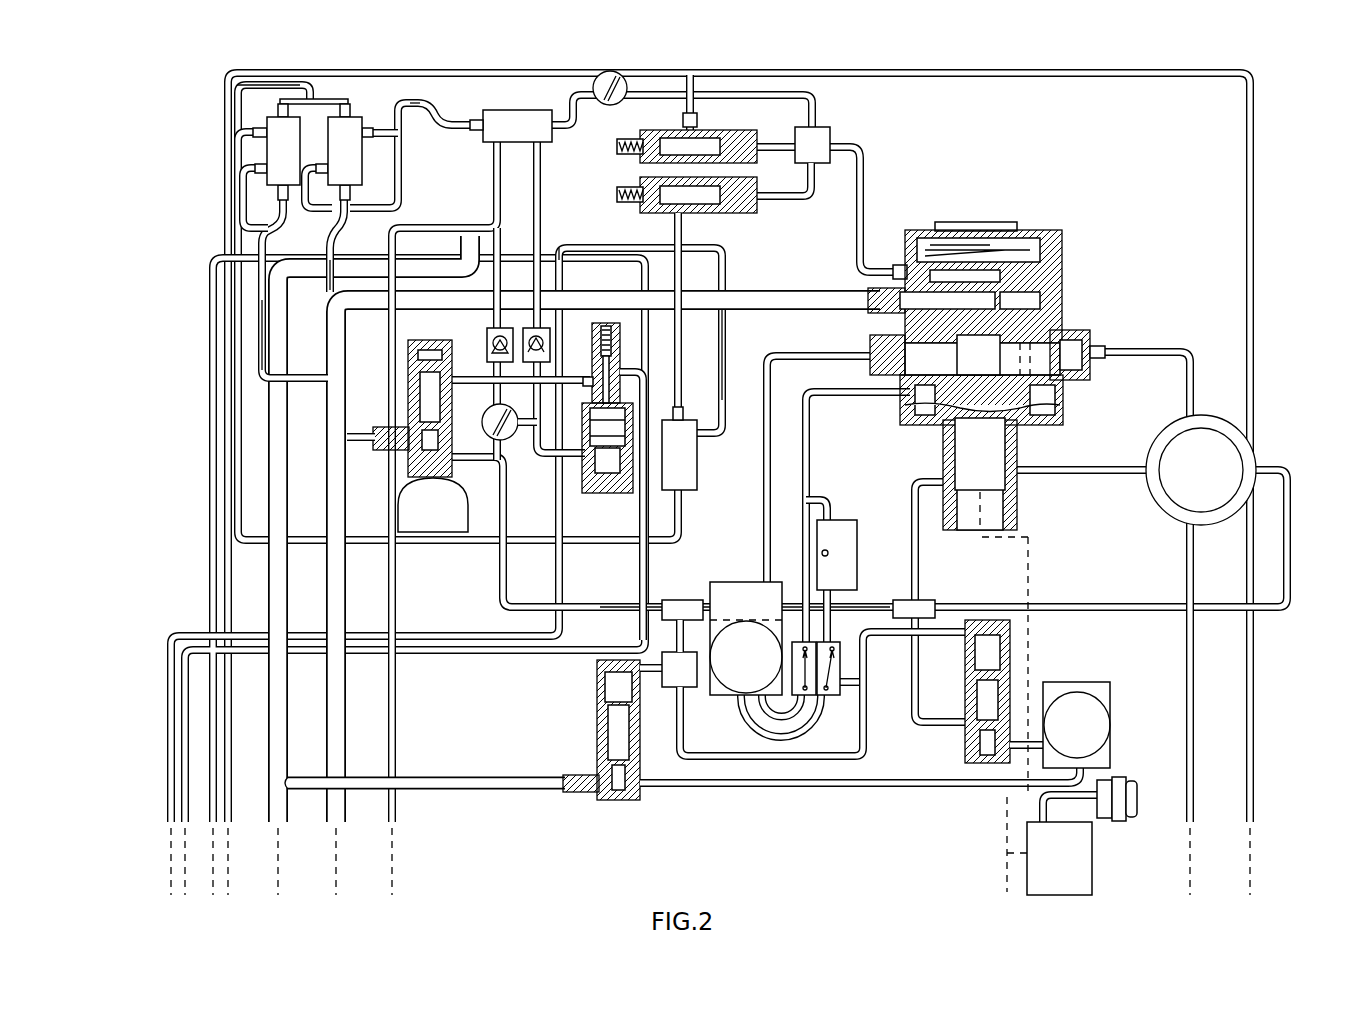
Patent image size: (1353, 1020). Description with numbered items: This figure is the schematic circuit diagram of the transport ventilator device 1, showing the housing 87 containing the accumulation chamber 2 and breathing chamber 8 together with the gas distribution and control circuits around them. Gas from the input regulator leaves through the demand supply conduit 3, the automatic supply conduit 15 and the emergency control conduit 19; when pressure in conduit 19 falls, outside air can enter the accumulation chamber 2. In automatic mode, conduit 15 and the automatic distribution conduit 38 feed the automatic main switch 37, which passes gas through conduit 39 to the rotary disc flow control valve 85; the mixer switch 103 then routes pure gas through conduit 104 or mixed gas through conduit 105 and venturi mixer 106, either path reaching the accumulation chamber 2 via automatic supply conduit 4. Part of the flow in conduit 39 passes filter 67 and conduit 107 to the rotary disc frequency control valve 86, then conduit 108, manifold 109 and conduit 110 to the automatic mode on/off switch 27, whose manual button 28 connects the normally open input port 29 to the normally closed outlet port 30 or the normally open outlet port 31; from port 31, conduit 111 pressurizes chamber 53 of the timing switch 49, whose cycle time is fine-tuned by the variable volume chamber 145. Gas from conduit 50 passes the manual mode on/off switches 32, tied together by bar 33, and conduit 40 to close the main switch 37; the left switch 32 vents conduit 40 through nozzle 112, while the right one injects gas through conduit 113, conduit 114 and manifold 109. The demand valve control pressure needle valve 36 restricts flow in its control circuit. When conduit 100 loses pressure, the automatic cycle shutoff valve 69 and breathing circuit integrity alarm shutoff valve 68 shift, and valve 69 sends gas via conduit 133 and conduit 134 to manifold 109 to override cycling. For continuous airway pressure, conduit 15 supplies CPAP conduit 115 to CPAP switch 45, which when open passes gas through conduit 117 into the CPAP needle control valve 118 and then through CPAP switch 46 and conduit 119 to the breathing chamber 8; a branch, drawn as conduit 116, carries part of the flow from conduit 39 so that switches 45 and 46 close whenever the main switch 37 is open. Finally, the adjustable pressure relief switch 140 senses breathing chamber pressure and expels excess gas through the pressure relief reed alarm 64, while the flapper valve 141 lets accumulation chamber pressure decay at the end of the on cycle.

The pump assembly 1 is at (992, 346).
The accumulation chamber 2 is at (987, 355).
The demand supply conduit 3 is at (342, 812).
The automatic supply conduit 4 is at (800, 428).
The breathing chamber 8 is at (980, 474).
The automatic supply conduit 15 is at (290, 812).
The emergency control conduit 19 is at (1135, 352).
The automatic mode on/off switch 27 is at (511, 126).
The manual button 28 is at (478, 122).
The input port 29 is at (608, 106).
The outlet port 30 is at (490, 146).
The outlet port 31 is at (528, 150).
The manual mode on/off switches 32 is at (308, 238).
The bar 33 is at (275, 87).
The demand valve control pressure needle valve 36 is at (585, 85).
The automatic main switch 37 is at (412, 362).
The automatic distribution conduit 38 is at (352, 440).
The conduit 39 is at (498, 585).
The conduit 40 is at (335, 272).
The CPAP switch 45 is at (605, 798).
The CPAP switch 46 is at (1010, 668).
The timing switch 49 is at (636, 313).
The conduit 50 is at (310, 378).
The timing switch chamber 53 is at (612, 470).
The pressure relief reed alarm 64 is at (1120, 820).
The filter 67 is at (895, 625).
The breathing circuit integrity alarm shutoff valve 68 is at (775, 135).
The automatic cycle shutoff valve 69 is at (722, 213).
The rotary disc flow control valve 85 is at (746, 638).
The rotary disc frequency control valve 86 is at (1201, 470).
The pump head 87 is at (930, 222).
The conduit 100 is at (918, 156).
The mixer switch 103 is at (845, 680).
The conduit 104 is at (805, 542).
The conduit 105 is at (782, 737).
The venturi mixer 106 is at (905, 605).
The conduit 107 is at (1292, 612).
The conduit 108 is at (1048, 478).
The manifold 109 is at (680, 485).
The conduit 110 is at (640, 262).
The conduit 111 is at (515, 215).
The nozzle 112 is at (240, 133).
The conduit 113 is at (425, 100).
The conduit 114 is at (225, 424).
The CPAP conduit 115 is at (442, 796).
The line 116 is at (668, 608).
The conduit 117 is at (720, 790).
The CPAP needle control valve 118 is at (1076, 725).
The conduit 119 is at (920, 568).
The conduit 133 is at (185, 640).
The conduit 134 is at (685, 350).
The adjustable pressure relief switch 140 is at (1041, 716).
The flapper valve 141 is at (1252, 140).
The variable volume chamber 145 is at (433, 505).